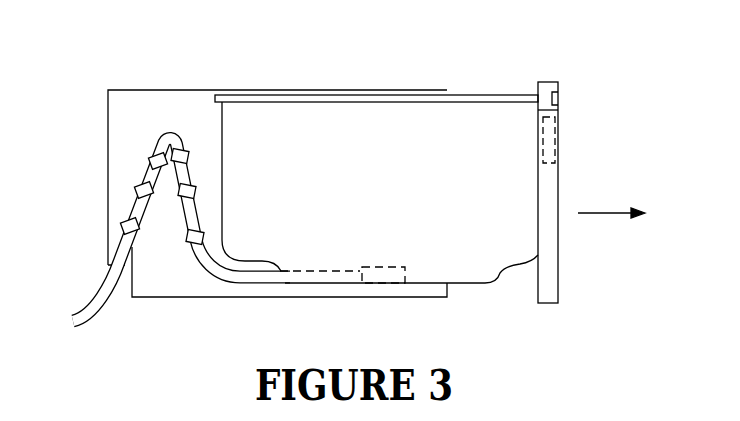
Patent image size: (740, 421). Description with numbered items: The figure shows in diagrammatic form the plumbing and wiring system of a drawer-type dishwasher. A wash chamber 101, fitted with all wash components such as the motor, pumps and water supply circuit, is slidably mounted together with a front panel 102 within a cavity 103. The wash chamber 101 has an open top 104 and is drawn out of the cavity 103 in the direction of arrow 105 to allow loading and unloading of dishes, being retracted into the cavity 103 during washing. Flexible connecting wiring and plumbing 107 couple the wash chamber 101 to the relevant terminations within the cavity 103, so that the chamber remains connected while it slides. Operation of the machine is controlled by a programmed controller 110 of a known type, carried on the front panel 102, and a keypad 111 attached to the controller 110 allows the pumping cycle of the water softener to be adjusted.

The wash chamber 101 is at (510, 248).
The front panel 102 is at (560, 152).
The cavity 103 is at (123, 134).
The open top 104 is at (475, 92).
The arrow 105 is at (600, 210).
The flexible connecting wiring and plumbing 107 is at (186, 155).
The programmed controller 110 is at (560, 130).
The keypad 111 is at (560, 93).